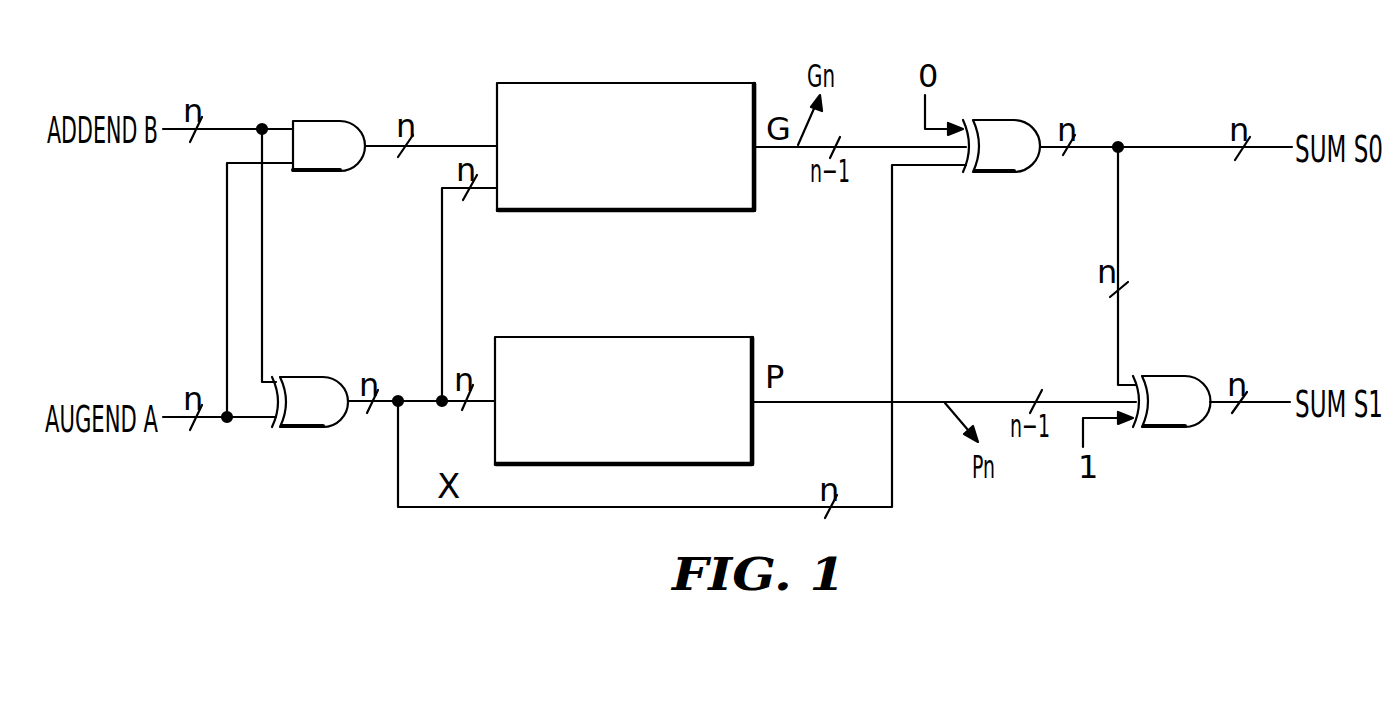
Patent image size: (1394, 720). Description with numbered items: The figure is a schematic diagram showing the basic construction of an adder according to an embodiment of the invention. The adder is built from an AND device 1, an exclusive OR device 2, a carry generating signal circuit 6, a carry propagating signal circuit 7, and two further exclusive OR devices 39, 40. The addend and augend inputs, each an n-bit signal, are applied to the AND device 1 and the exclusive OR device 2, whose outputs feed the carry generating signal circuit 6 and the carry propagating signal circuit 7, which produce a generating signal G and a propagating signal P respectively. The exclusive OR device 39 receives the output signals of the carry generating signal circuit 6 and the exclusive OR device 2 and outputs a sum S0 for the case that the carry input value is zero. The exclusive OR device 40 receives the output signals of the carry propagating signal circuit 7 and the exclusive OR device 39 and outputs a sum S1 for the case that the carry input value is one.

The AND device 1 is at (331, 127).
The exclusive OR device 2 is at (305, 378).
The carry generating signal circuit 6 is at (652, 85).
The carry propagating signal circuit 7 is at (658, 342).
The exclusive OR device 39 is at (1002, 125).
The exclusive OR device 40 is at (1170, 378).